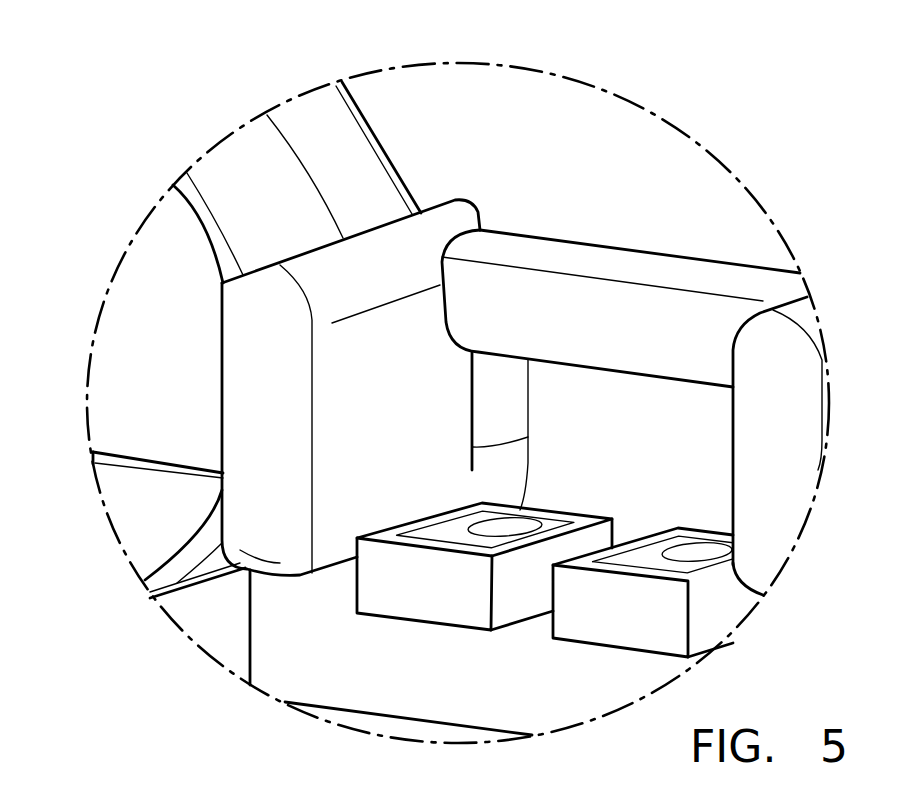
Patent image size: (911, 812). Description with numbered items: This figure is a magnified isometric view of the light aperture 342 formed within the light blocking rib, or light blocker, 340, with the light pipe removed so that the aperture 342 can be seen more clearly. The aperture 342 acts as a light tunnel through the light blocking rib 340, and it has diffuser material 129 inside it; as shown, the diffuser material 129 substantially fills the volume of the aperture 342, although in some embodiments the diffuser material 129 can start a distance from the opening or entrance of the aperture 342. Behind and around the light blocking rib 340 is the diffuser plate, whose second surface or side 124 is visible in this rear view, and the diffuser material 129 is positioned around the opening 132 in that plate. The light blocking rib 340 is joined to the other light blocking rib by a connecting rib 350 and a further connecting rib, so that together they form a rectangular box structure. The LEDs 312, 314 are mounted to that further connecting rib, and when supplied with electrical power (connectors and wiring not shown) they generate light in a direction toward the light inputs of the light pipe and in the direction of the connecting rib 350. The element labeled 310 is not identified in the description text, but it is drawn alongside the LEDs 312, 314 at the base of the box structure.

The second surface or side 124 is at (528, 312).
The diffuser material 129 is at (335, 146).
The opening 132 is at (198, 227).
The first pad 310 is at (452, 649).
The LED 312 is at (381, 593).
The LED 314 is at (630, 627).
The light blocking rib 340 is at (253, 387).
The aperture 342 is at (500, 398).
The connecting rib 350 is at (679, 297).